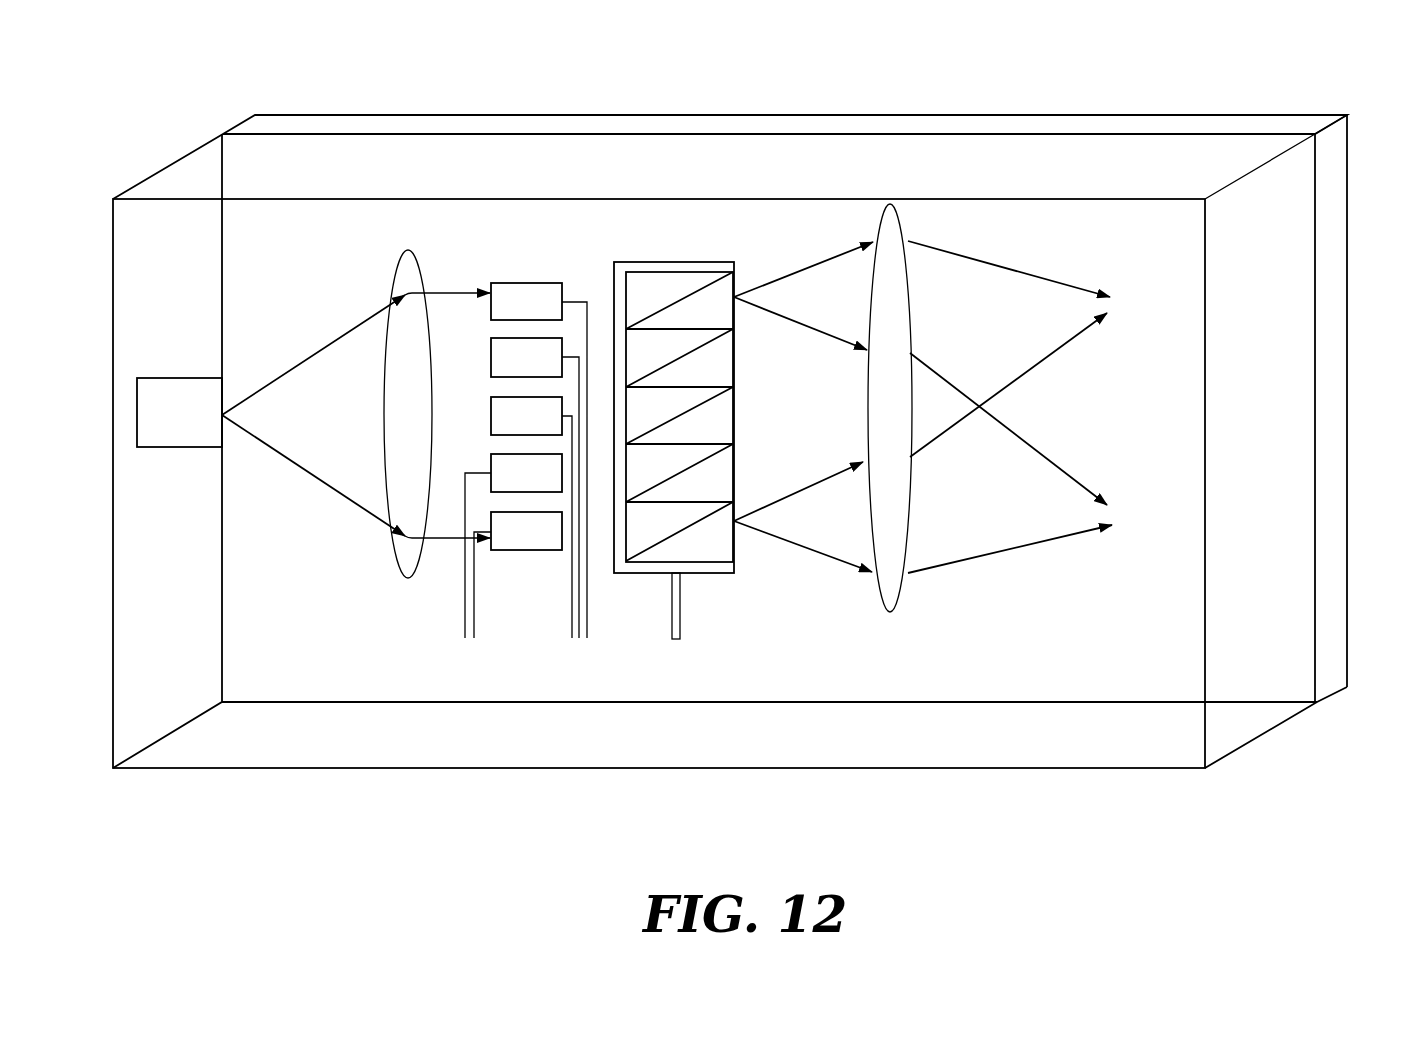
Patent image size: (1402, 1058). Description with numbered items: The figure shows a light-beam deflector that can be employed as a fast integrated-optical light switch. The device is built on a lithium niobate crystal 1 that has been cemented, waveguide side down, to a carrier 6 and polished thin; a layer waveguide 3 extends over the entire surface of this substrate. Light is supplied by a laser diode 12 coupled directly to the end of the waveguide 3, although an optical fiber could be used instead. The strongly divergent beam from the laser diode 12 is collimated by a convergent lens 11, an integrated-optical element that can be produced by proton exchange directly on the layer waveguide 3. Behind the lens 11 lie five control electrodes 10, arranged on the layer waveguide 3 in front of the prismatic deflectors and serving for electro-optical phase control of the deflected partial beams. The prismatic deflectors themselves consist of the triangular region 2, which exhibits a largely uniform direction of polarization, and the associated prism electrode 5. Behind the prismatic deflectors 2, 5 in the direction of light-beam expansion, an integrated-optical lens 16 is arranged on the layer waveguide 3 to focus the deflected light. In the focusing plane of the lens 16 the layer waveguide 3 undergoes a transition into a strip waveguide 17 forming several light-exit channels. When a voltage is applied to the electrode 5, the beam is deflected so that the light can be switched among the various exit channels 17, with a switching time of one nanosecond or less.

The lithium niobate crystal 1 is at (1333, 430).
The region exhibiting a largely uniform direction of polarization 2 is at (642, 530).
The layer waveguide 3 is at (998, 172).
The prism electrode 5 is at (702, 548).
The carrier 6 is at (207, 735).
The control electrodes 10 is at (535, 293).
The convergent lens 11 is at (407, 562).
The laser diode 12 is at (176, 390).
The integrated-optical lens 16 is at (886, 222).
The strip waveguide 17 is at (1158, 218).